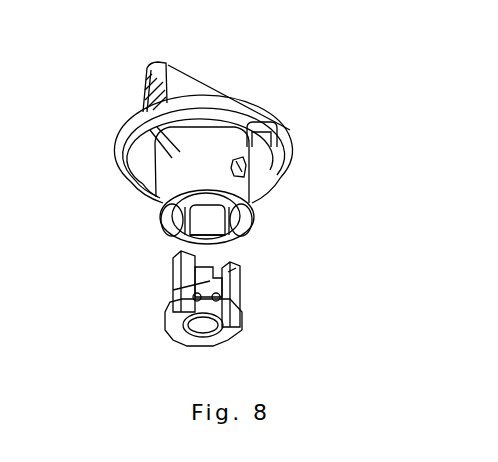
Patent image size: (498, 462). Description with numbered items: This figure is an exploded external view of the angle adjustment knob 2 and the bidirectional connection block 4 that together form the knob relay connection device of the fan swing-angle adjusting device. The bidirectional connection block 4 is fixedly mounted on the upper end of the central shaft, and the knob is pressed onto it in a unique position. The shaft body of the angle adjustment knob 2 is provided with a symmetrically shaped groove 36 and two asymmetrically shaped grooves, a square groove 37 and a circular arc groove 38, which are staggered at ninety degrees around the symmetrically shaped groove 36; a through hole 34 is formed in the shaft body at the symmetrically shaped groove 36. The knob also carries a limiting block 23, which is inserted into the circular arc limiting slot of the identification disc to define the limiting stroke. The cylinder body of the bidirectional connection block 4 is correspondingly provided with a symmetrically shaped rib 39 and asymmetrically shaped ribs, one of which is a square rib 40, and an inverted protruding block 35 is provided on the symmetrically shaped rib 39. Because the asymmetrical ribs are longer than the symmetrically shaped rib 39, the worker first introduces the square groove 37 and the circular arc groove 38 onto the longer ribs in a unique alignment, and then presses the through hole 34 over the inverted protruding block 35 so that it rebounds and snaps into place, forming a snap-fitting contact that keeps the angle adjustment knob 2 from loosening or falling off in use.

The angle adjustment knob 2 is at (150, 88).
The bidirectional connection block 4 is at (207, 296).
The limiting block 23 is at (236, 171).
The through hole 34 is at (240, 166).
The inverted protruding block 35 is at (232, 268).
The symmetrically shaped groove 36 is at (238, 197).
The square groove 37 is at (162, 200).
The circular arc groove 38 is at (244, 232).
The symmetrically shaped rib 39 is at (228, 272).
The square rib 40 is at (174, 263).